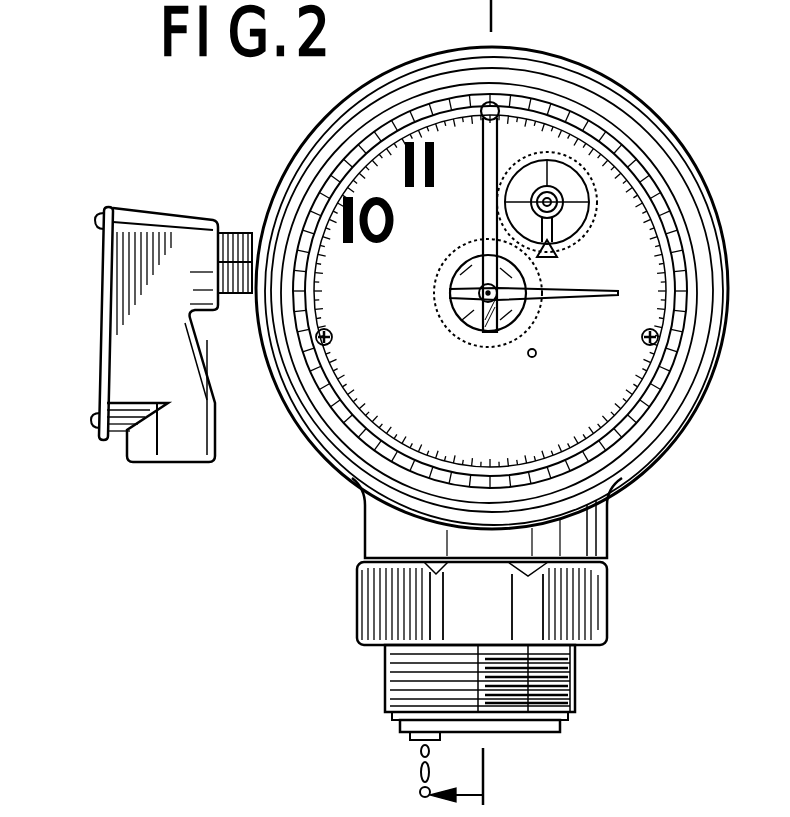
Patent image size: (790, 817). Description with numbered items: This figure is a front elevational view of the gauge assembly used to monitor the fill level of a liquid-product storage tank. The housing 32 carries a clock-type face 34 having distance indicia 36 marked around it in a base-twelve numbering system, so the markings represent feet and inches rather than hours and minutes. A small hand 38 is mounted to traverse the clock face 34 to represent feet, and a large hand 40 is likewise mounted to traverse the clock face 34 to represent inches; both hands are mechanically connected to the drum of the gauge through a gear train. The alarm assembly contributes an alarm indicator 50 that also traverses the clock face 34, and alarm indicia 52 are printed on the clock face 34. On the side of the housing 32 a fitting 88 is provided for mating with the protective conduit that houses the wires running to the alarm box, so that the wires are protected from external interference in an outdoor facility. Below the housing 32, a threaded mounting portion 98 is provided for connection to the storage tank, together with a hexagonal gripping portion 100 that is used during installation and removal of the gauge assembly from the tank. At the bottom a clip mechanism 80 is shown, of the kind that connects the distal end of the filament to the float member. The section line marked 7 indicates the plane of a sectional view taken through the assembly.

The section line 7- 7 is at (460, 402).
The housing 32 is at (496, 288).
The clock face 34 is at (662, 247).
The distance indicia 36 is at (396, 357).
The small hand 38 is at (578, 300).
The large hand 40 is at (483, 181).
The alarm indicator 50 is at (571, 251).
The alarm indicia 52 is at (537, 150).
The clip mechanism 80 is at (418, 773).
The fitting 88 is at (105, 333).
The threaded mounting portion 98 is at (575, 678).
The hexagonal gripping portion 100 is at (583, 610).